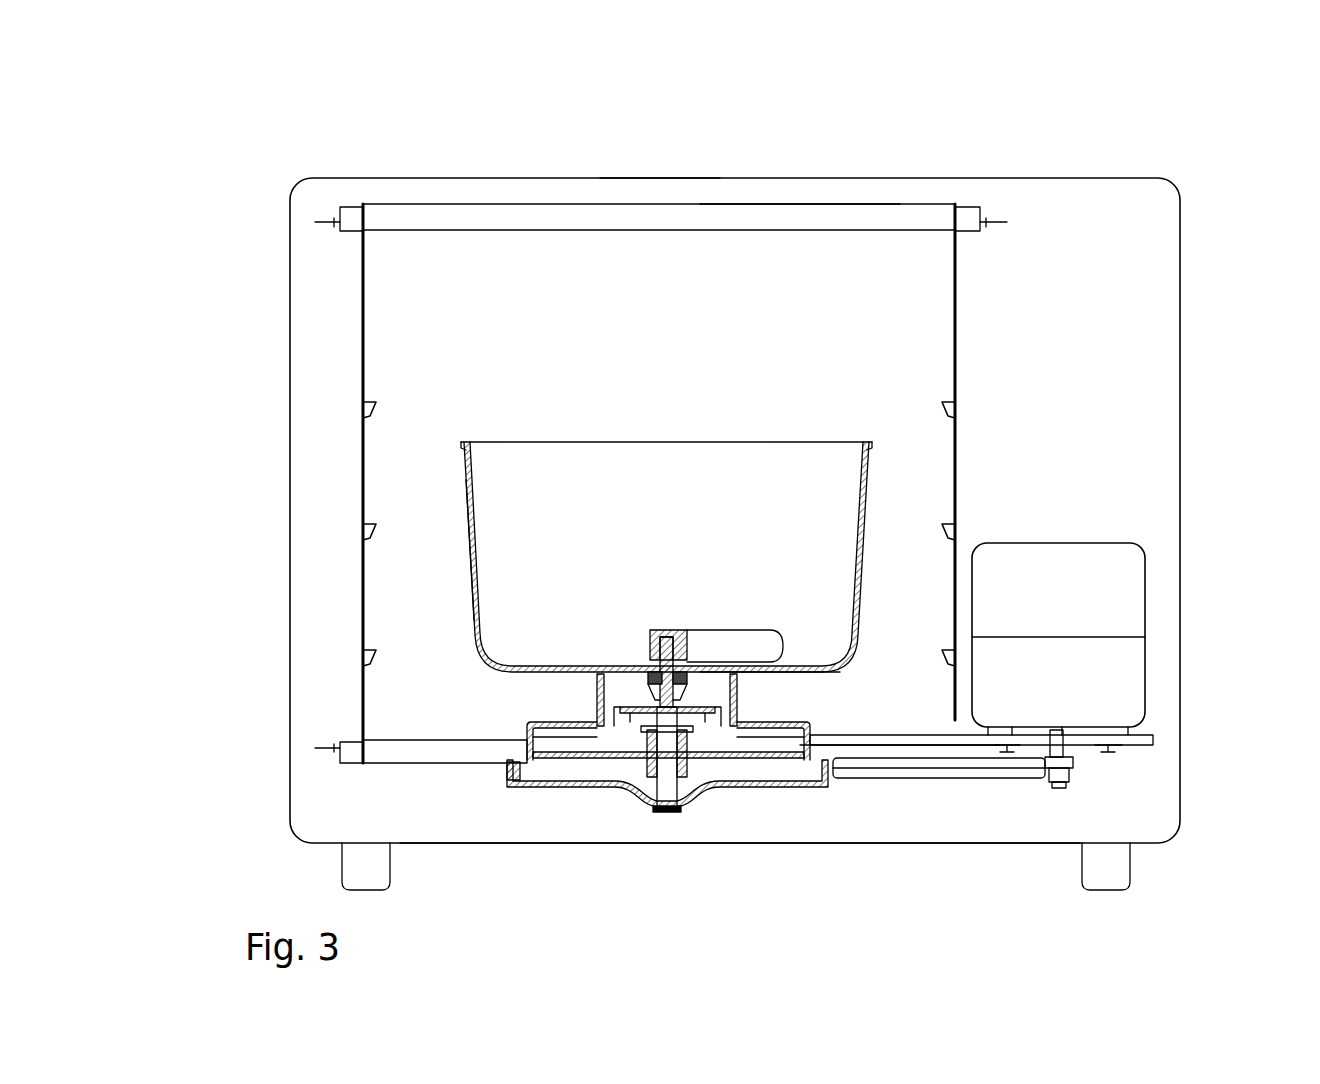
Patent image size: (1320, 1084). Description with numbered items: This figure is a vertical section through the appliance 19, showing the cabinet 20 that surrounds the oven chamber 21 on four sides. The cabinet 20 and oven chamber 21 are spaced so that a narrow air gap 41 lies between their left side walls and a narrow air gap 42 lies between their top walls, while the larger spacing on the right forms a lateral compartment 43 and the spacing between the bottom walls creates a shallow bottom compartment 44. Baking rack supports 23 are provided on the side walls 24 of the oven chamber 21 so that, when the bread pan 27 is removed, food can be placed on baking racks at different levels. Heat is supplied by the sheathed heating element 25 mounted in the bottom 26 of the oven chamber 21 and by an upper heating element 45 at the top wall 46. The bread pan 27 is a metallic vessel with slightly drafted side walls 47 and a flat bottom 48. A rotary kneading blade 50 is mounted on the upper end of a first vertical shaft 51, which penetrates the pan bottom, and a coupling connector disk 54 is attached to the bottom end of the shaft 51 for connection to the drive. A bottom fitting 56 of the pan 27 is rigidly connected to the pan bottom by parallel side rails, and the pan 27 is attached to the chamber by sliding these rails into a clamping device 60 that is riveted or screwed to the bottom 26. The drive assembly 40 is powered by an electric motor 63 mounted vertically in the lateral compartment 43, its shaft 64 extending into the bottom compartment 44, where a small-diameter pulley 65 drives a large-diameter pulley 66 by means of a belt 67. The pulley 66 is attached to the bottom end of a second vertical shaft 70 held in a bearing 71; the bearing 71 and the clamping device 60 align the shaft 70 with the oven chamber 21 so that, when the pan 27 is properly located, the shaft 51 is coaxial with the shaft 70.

The appliance 19 is at (1215, 192).
The outer housing or cabinet 20 is at (652, 176).
The oven chamber 21 is at (478, 283).
The baking rack supports 23 is at (360, 408).
The side walls 24 is at (958, 272).
The sheathed heating element 25 is at (407, 750).
The bottom 26 is at (904, 740).
The bread pan 27 is at (580, 515).
The drive assembly 40 is at (518, 766).
The air gap 41 is at (325, 277).
The air gap 42 is at (403, 192).
The lateral compartment 43 is at (1130, 360).
The bottom compartment 44 is at (968, 805).
The upper heating element 45 is at (735, 218).
The top wall 46 is at (823, 203).
The side walls 47 is at (472, 575).
The flat bottom 48 is at (808, 664).
The rotary kneading blade 50 is at (712, 643).
The first vertical shaft 51 is at (700, 762).
The coupling connector disk 54 is at (613, 742).
The bottom fitting 56 is at (726, 762).
The clamping device 60 is at (803, 725).
The electric motor 63 is at (1118, 672).
The motor shaft 64 is at (1064, 740).
The small-diameter pulley 65 is at (1070, 777).
The large-diameter pulley 66 is at (807, 787).
The belt 67 is at (1016, 768).
The second vertical shaft 70 is at (663, 805).
The bearing 71 is at (644, 771).